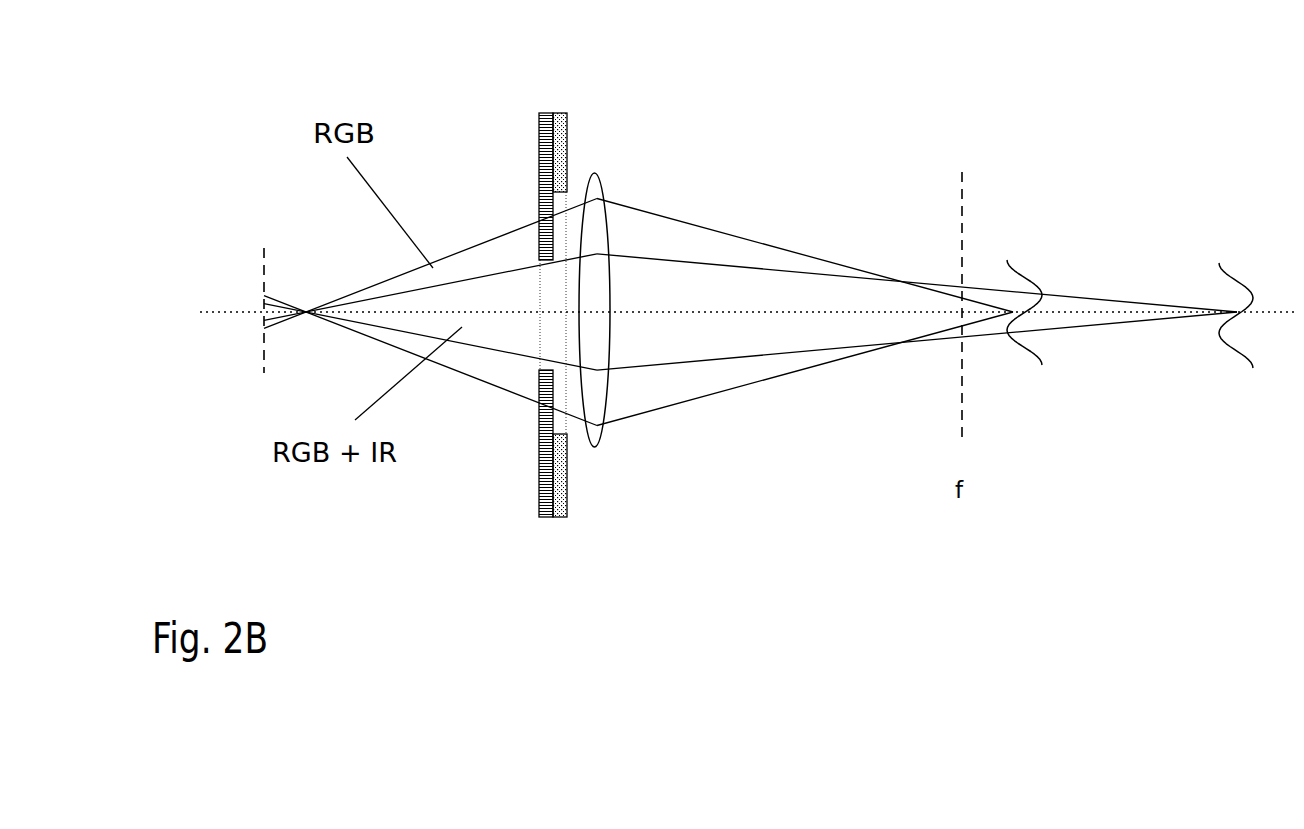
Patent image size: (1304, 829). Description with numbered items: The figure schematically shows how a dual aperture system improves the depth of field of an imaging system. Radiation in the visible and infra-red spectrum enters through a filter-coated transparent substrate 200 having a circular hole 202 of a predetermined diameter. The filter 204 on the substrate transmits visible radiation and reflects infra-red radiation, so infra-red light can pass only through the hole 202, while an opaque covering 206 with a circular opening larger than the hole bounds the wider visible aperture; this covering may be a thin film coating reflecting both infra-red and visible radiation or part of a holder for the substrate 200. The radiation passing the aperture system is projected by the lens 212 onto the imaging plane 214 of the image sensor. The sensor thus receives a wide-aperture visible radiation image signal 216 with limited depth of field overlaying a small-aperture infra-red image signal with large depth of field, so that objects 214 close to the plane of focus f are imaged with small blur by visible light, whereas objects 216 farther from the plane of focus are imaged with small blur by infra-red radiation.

The filter-coated transparent substrate 200 is at (550, 122).
The circular hole 202 is at (540, 260).
The filter 204 is at (540, 420).
The opaque covering 206 is at (555, 122).
The lens 212 is at (595, 432).
The imaging plane 214 is at (649, 307).
The wide-aperture visible radiation image signal 216 is at (1247, 338).